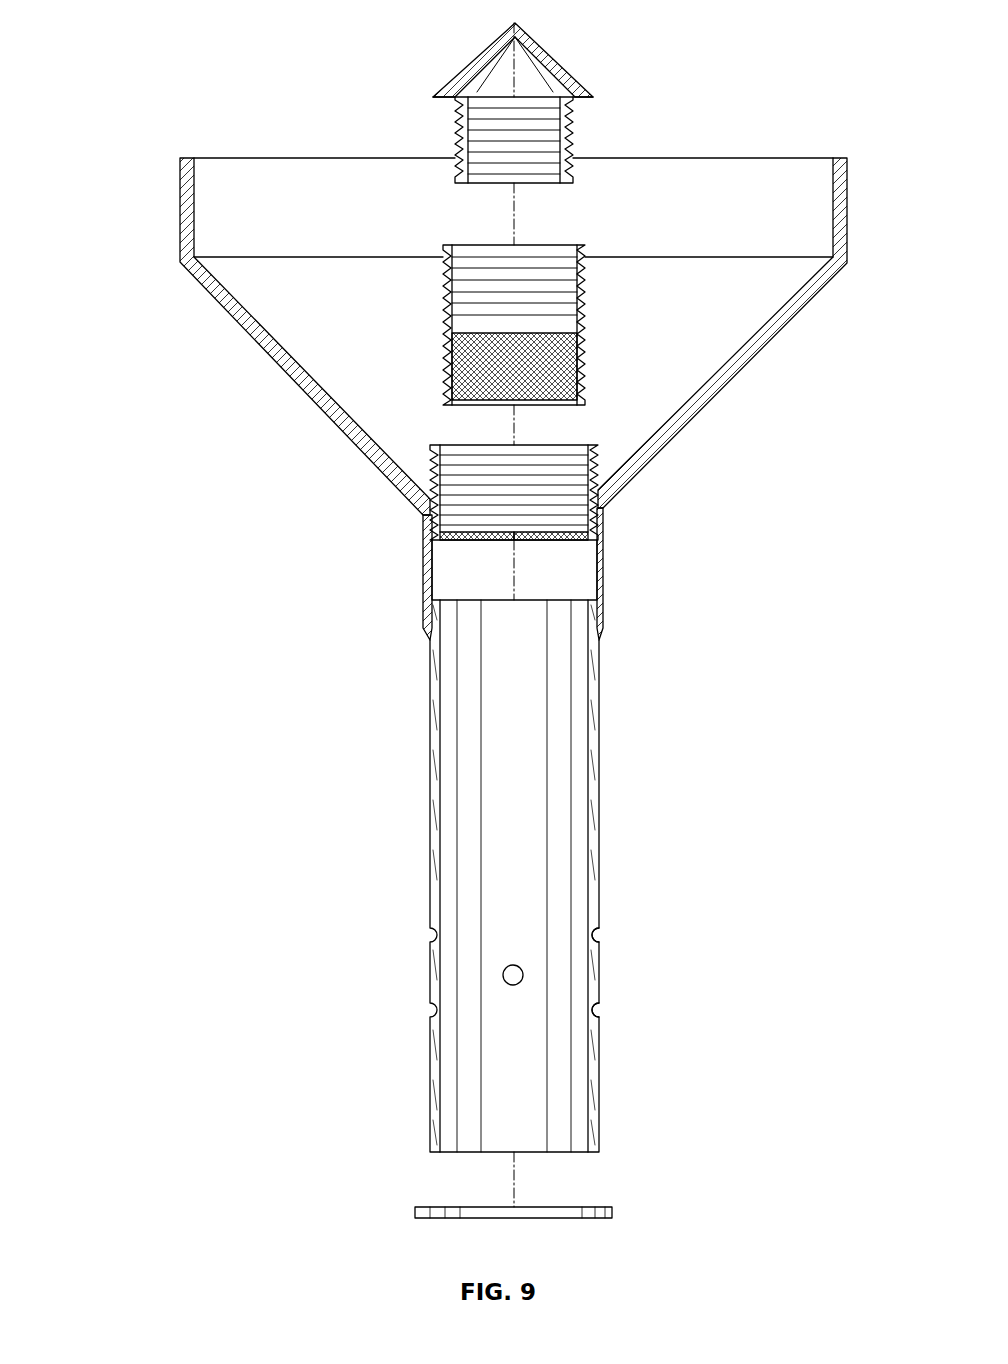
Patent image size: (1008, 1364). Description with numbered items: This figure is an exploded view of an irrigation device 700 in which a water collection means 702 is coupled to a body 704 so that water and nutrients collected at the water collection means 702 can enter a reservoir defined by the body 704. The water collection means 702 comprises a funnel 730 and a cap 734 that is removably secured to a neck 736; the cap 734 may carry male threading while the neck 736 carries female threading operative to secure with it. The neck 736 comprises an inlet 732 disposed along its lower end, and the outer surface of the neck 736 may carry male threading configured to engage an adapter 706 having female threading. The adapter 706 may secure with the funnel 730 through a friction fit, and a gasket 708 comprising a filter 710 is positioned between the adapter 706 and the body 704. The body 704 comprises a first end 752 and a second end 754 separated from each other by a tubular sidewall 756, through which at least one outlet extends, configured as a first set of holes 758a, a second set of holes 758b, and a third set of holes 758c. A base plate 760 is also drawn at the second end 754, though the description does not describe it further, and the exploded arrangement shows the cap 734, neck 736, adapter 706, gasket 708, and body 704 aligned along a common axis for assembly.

The irrigation device 700 is at (160, 105).
The water collection means 702 is at (170, 352).
The body 704 is at (258, 829).
The adapter 706 is at (435, 470).
The gasket 708 is at (457, 540).
The filter 710 is at (520, 545).
The funnel 730 is at (513, 336).
The inlet 732 is at (445, 357).
The cap 734 is at (556, 52).
The neck 736 is at (600, 320).
The first end 752 is at (568, 585).
The second end 754 is at (585, 1165).
The tubular sidewall 756 is at (514, 876).
The first set of holes 758a is at (605, 937).
The second set of holes 758b is at (504, 960).
The third set of holes 758c is at (605, 1010).
The base flange 760 is at (428, 1205).